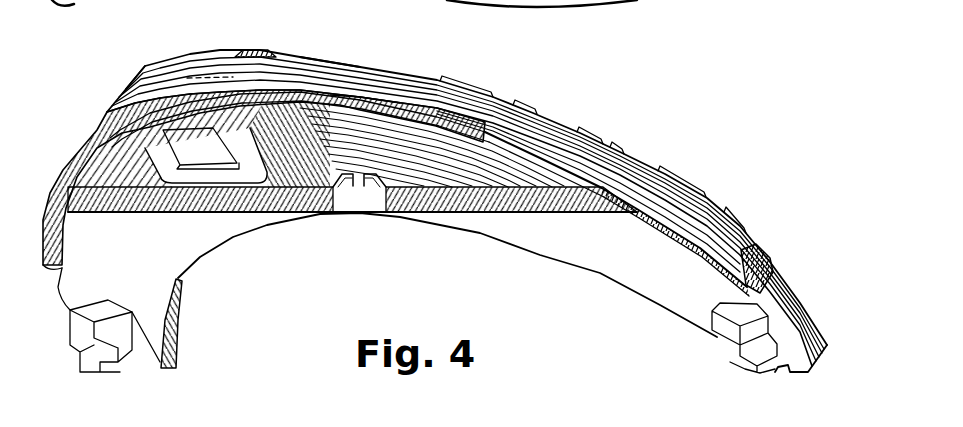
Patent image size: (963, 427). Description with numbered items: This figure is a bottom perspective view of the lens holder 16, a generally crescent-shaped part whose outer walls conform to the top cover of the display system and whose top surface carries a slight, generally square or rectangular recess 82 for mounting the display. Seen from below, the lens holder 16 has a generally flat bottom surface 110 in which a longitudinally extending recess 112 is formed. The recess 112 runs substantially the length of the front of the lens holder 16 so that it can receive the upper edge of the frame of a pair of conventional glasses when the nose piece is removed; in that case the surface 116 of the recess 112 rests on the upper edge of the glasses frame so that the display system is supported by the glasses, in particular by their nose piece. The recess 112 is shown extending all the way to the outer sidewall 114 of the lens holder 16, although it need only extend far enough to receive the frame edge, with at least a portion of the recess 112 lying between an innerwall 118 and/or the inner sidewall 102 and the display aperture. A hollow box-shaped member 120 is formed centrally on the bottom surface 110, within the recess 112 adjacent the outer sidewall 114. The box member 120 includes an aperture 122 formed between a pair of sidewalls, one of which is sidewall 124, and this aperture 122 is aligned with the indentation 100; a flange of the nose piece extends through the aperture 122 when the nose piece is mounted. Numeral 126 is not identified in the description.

The lens holder 16 is at (427, 278).
The recess 82 is at (95, 150).
The indentation 100 is at (357, 203).
The inner sidewall 102 is at (283, 222).
The bottom surface 110 is at (181, 233).
The recess 112 is at (398, 163).
The outer sidewall 114 is at (440, 100).
The surface 116 is at (393, 213).
The innerwall 118 is at (567, 205).
The hollow box-shaped member 120 is at (320, 108).
The aperture 122 is at (307, 117).
The sidewall 124 is at (333, 117).
The flange 126 is at (243, 103).